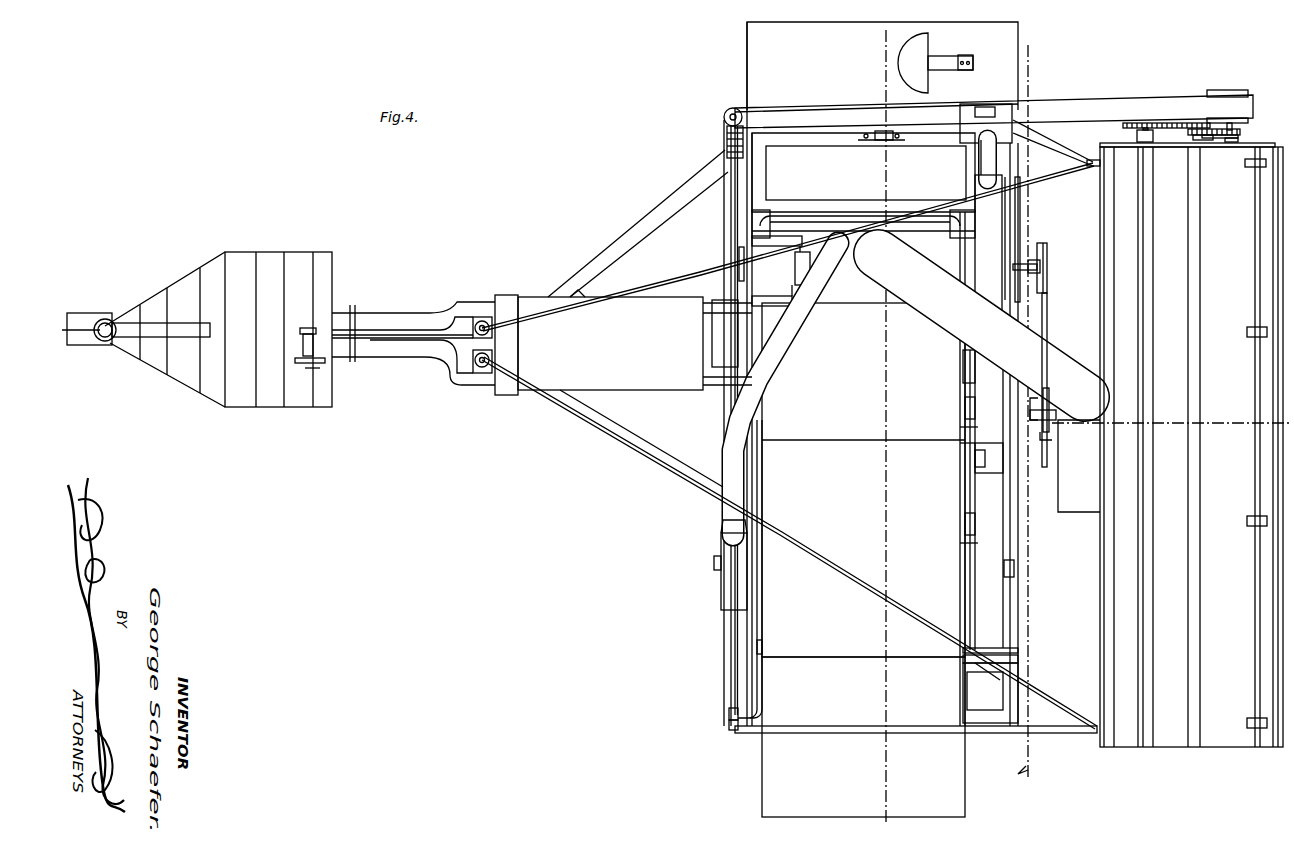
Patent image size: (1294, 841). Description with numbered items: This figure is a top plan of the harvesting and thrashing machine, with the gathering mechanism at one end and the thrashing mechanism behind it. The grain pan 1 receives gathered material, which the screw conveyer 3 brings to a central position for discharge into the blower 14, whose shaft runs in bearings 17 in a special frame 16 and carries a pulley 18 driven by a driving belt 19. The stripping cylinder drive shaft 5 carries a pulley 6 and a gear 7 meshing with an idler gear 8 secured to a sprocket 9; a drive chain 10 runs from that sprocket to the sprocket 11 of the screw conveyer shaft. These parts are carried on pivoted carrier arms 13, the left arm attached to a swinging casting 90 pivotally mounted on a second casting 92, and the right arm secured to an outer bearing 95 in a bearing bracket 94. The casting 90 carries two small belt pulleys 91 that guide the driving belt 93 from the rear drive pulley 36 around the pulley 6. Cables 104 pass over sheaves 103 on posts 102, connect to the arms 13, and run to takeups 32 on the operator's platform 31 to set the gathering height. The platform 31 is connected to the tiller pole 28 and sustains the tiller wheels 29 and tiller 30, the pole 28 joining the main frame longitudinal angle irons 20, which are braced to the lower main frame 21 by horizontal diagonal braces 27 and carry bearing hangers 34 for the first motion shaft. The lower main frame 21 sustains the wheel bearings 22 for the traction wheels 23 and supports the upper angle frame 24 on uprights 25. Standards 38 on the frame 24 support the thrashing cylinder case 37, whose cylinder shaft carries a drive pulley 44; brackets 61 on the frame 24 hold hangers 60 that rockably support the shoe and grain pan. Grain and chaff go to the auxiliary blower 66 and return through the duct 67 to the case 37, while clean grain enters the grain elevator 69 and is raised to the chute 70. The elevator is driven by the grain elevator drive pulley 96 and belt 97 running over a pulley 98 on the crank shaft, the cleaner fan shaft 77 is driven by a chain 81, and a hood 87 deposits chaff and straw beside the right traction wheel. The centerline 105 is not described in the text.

The grain pan 1 is at (1082, 641).
The screw conveyer 3 is at (1026, 412).
The stripping cylinder drive shaft 5 is at (886, 822).
The pulley 6 is at (1172, 436).
The gear 7 is at (1241, 136).
The idler gear 8 is at (1193, 136).
The sprocket 9 is at (1197, 127).
The drive chain 10 is at (1165, 122).
The sprocket of the screw conveyer shaft 11 is at (1134, 122).
The pivoted carrier arms 13 is at (1056, 158).
The blower 14 is at (1072, 511).
The special frame 16 is at (1050, 460).
The bearings 17 is at (966, 108).
The pulley 18 is at (1052, 475).
The driving belt 19 is at (1047, 306).
The main frame longitudinal angle irons 20 is at (456, 308).
The lower main frame 21 is at (790, 138).
The wheel bearings 22 is at (880, 145).
The traction wheels 23 is at (966, 692).
The upper angle frame 24 is at (757, 628).
The uprights 25 is at (757, 652).
The horizontal diagonal braces 27 is at (612, 258).
The tiller pole 28 is at (364, 322).
The tiller wheels 29 is at (82, 318).
The tiller 30 is at (190, 320).
The operator's platform 31 is at (218, 329).
The takeups 32 is at (300, 345).
The bearing hangers 34 is at (981, 325).
The rear drive pulley 36 is at (712, 332).
The thrashing cylinder case 37 is at (792, 389).
The standards 38 is at (786, 312).
The drive pulley 44 is at (933, 63).
The hangers 60 is at (752, 232).
The brackets 61 is at (752, 218).
The auxiliary blower 66 is at (721, 549).
The duct 67 is at (782, 353).
The grain elevator 69 is at (991, 245).
The chute 70 is at (978, 157).
The shaft of the cleaner fan 77 is at (1047, 262).
The driving chain 81 is at (739, 258).
The hood 87 is at (764, 768).
The casting 90 is at (724, 130).
The belt pulleys 91 is at (733, 112).
The second casting 92 is at (748, 55).
The driving belt 93 is at (735, 190).
The bearing bracket 94 is at (729, 714).
The outer bearing 95 is at (729, 731).
The grain elevator drive pulley 96 is at (1020, 195).
The grain elevator driving belt 97 is at (1006, 215).
The pulley 98 is at (1075, 110).
The posts 102 is at (1018, 660).
The sheaves 103 is at (1020, 672).
The cables 104 is at (1042, 704).
The fitting 105 is at (1004, 566).